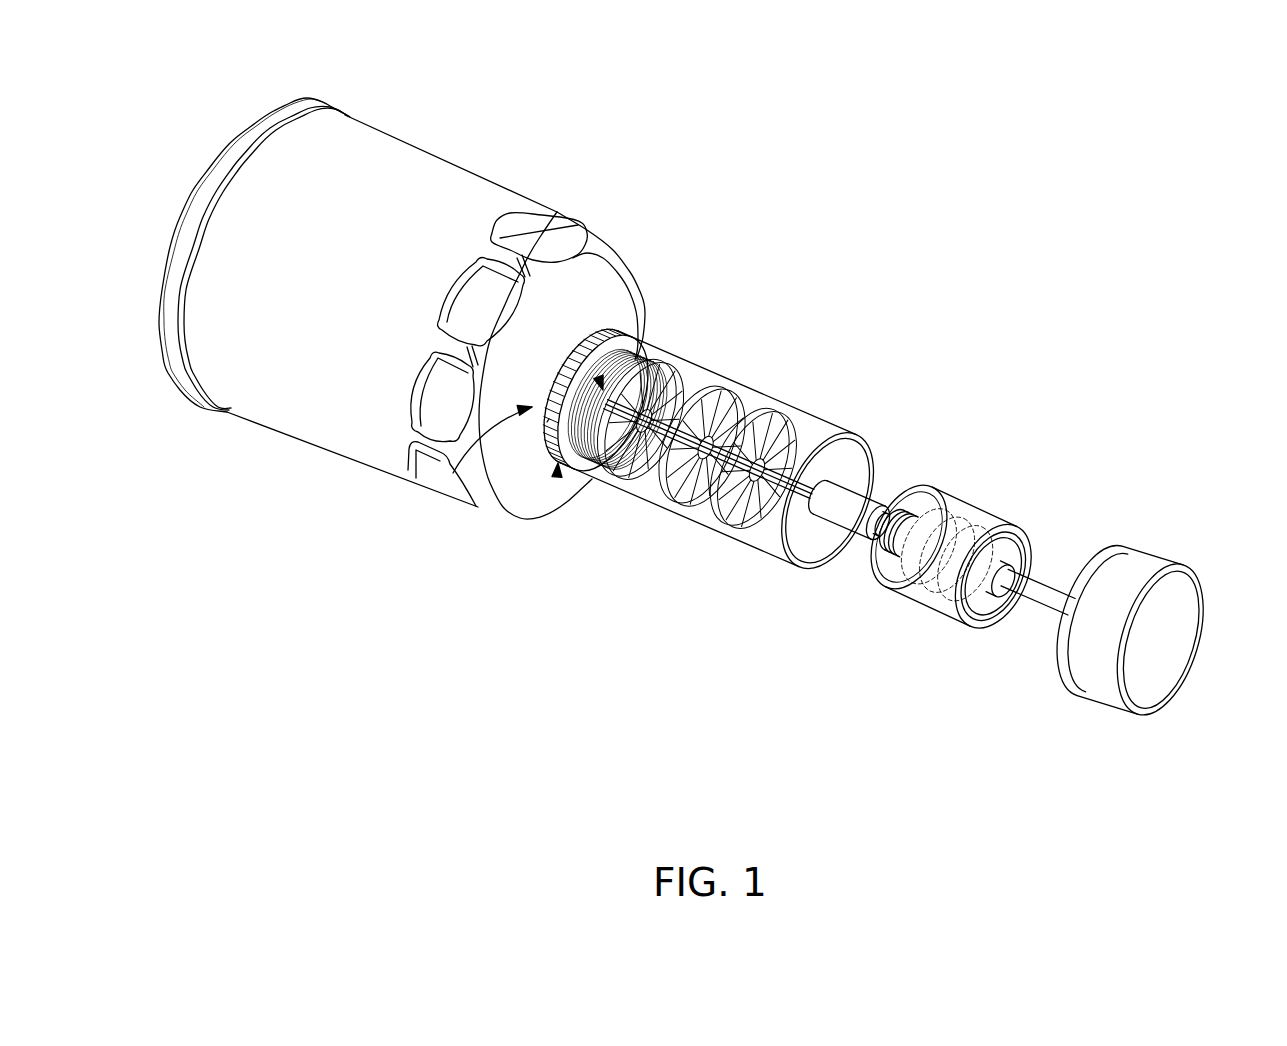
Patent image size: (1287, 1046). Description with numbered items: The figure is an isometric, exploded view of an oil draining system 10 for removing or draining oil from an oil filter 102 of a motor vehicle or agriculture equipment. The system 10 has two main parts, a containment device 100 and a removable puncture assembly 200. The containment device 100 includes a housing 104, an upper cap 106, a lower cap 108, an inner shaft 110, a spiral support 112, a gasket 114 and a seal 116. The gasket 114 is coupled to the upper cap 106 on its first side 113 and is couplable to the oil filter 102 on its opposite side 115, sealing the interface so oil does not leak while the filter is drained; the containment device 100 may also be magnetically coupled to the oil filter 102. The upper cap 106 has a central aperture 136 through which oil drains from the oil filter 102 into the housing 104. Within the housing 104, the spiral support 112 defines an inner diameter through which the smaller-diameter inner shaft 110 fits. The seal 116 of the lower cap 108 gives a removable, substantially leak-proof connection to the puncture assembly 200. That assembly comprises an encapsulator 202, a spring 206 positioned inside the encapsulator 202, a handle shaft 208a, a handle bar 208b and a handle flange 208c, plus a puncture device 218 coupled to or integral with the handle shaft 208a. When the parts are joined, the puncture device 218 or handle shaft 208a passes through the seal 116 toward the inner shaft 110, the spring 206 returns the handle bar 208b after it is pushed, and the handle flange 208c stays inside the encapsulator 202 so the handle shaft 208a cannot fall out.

The oil draining system 10 is at (948, 175).
The containment device 100 is at (963, 440).
The oil filter 102 is at (270, 425).
The housing 104 is at (763, 387).
The upper cap 106 is at (606, 404).
The lower cap 108 is at (827, 500).
The inner shaft 110 is at (747, 465).
The spiral support 112 is at (696, 444).
The first side 113 is at (558, 463).
The gasket 114 is at (547, 422).
The opposite side 115 is at (468, 467).
The seal 116 is at (880, 523).
The central aperture 136 is at (603, 390).
The removable puncture assembly 200 is at (977, 450).
The encapsulator 202 is at (951, 556).
The spring 206 is at (947, 555).
The handle shaft 208a is at (1038, 592).
The handle bar 208b is at (1130, 630).
The handle flange 208c is at (993, 576).
The puncture device 218 is at (628, 285).